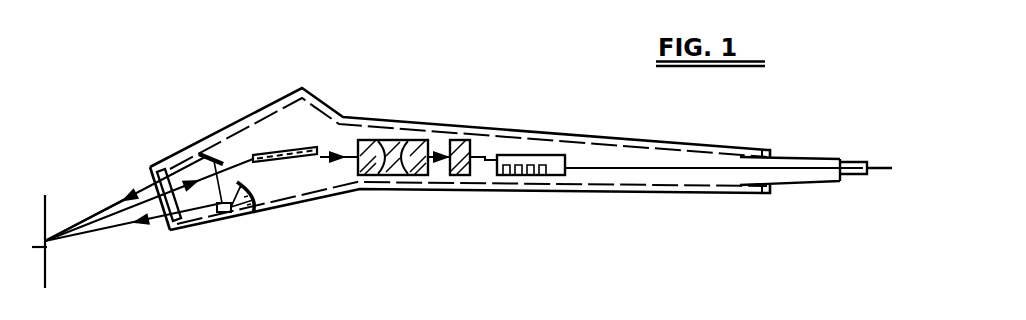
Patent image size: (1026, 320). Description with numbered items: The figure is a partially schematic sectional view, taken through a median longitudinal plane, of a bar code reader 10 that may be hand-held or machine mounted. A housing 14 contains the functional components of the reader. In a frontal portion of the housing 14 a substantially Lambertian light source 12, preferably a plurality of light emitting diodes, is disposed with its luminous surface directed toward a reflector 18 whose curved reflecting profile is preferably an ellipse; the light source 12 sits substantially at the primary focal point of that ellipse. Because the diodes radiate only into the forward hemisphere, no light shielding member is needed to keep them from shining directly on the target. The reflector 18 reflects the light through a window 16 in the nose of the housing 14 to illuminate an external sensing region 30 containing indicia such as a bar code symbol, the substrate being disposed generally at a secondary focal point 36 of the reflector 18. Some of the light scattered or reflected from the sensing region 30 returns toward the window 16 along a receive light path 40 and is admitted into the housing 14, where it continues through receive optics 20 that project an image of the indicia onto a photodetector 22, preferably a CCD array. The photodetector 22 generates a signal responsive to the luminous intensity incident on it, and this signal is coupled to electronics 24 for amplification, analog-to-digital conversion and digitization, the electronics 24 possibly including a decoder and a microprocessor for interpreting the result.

The bar code reader 10 is at (345, 82).
The light source 12 is at (251, 214).
The housing 14 is at (690, 138).
The window 16 is at (152, 182).
The reflector 18 is at (218, 146).
The receive optics 20 is at (377, 140).
The photodetector 22 is at (463, 138).
The electronics 24 is at (530, 153).
The sensing region 30 is at (46, 198).
The secondary focal point 36 is at (33, 248).
The receive light path 40 is at (237, 165).